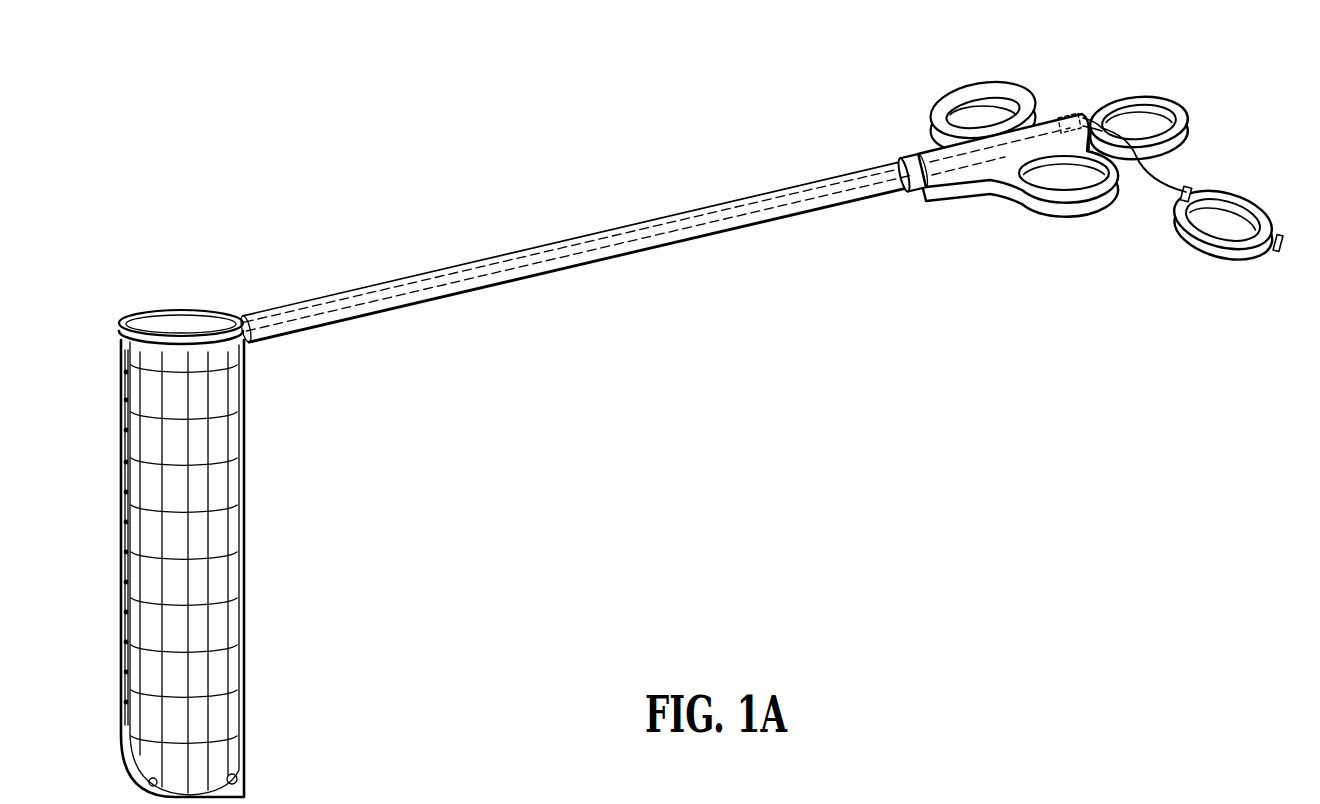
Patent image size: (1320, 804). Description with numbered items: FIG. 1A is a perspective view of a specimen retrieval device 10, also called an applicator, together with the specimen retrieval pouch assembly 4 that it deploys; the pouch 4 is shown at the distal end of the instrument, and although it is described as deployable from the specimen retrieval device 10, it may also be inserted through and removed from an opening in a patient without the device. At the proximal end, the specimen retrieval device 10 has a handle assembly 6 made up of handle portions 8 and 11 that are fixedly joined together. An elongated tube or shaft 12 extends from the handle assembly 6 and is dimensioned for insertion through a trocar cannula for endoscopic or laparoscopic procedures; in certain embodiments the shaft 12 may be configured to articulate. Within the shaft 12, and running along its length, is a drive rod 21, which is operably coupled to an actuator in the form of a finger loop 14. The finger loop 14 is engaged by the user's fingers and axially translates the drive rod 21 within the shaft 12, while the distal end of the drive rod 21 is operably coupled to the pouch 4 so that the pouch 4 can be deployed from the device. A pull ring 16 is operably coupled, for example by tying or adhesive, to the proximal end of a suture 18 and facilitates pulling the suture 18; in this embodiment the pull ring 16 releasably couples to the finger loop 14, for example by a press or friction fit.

The specimen retrieval pouch assembly 4 is at (113, 512).
The handle assembly 6 is at (1060, 74).
The handle portion 8 is at (1040, 105).
The specimen retrieval device 10 is at (696, 292).
The handle portion 11 is at (1020, 200).
The elongated shaft 12 is at (528, 251).
The finger loop 14 is at (1150, 100).
The pull ring 16 is at (1262, 212).
The suture 18 is at (436, 272).
The drive rod 21 is at (362, 286).